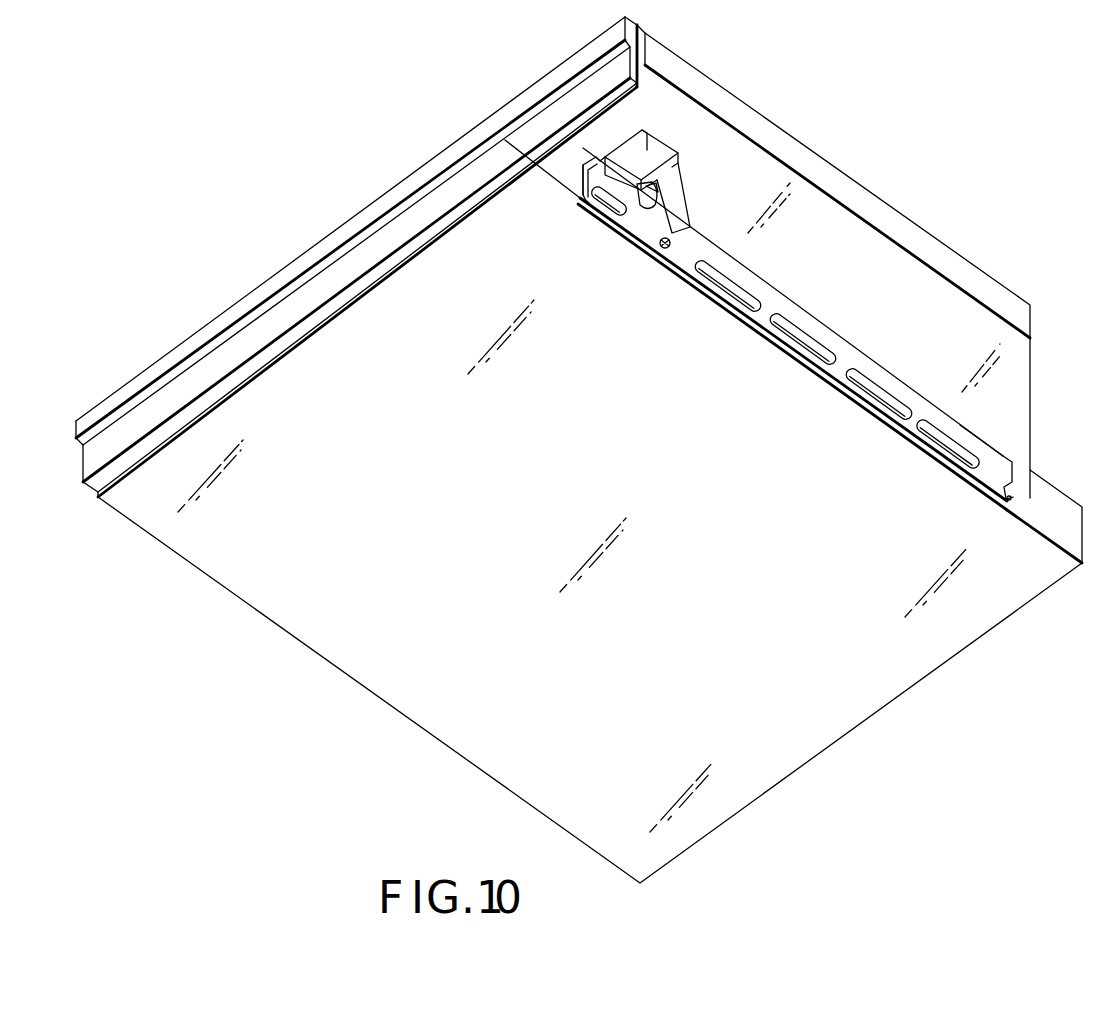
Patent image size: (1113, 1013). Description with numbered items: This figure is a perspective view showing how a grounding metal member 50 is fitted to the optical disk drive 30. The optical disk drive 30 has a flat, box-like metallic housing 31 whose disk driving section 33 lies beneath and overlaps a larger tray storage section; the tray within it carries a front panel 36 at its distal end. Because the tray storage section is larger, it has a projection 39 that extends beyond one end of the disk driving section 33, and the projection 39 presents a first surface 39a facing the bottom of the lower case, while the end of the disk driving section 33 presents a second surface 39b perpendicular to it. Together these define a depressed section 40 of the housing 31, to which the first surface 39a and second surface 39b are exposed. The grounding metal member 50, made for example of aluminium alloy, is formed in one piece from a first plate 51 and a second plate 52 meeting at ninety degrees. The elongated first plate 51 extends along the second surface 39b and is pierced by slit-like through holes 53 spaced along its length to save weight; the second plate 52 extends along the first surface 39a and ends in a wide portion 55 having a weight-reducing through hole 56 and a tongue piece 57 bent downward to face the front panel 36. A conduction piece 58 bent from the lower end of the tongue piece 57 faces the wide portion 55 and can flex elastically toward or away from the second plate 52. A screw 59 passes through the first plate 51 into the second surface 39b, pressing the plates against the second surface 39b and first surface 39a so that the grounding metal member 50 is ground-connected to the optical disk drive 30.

The optical disk drive 30 is at (814, 684).
The housing 31 is at (930, 630).
The disk driving section 33 is at (337, 635).
The front panel 36 is at (335, 270).
The projection 39 is at (1005, 297).
The first surface 39a is at (937, 290).
The second surface 39b is at (553, 170).
The depressed section 40 is at (783, 213).
The grounding metal member 50 is at (790, 321).
The first plate 51 is at (998, 484).
The second plate 52 is at (978, 425).
The through holes 53 is at (594, 210).
The wide portion 55 is at (660, 153).
The through hole 56 is at (650, 208).
The tongue piece 57 is at (608, 148).
The conduction piece 58 is at (652, 180).
The screw 59 is at (672, 235).